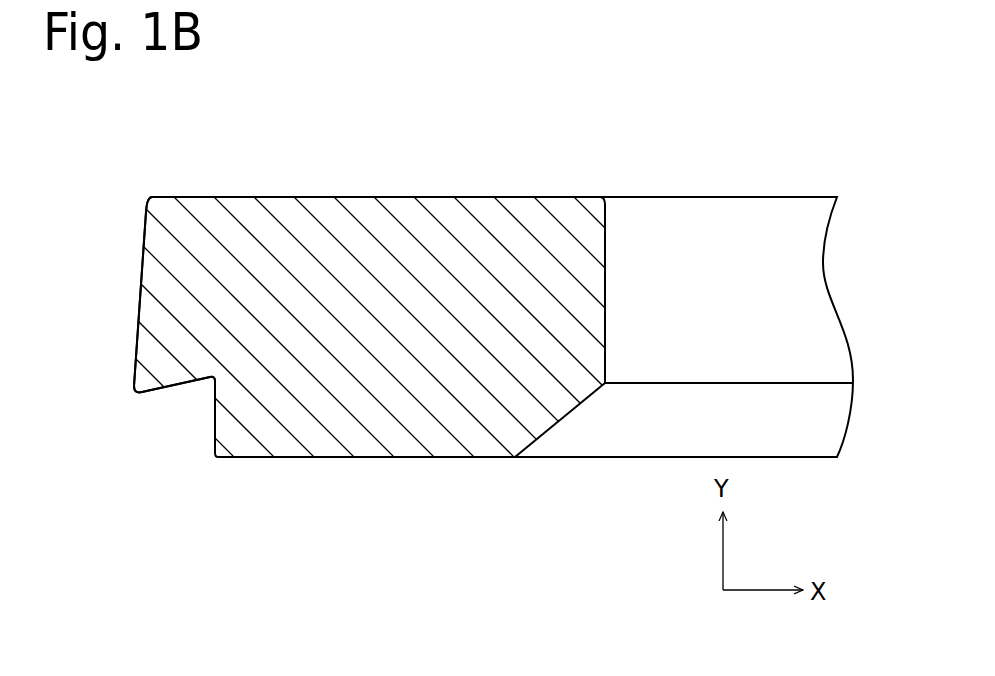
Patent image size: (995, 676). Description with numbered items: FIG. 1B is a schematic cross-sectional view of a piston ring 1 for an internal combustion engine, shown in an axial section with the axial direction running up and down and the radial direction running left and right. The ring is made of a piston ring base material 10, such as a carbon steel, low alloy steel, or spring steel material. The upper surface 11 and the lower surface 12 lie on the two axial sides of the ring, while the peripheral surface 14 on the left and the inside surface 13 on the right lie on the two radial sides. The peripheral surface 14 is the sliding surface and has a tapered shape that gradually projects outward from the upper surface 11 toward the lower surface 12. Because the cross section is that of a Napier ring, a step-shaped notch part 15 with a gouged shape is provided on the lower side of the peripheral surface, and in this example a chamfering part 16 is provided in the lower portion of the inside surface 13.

The piston ring 1 is at (554, 117).
The piston ring base material 10 is at (655, 196).
The upper surface 11 is at (384, 195).
The lower surface 12 is at (373, 462).
The inside surface 13 is at (609, 308).
The peripheral surface 14 is at (143, 233).
The step-shaped notch part 15 is at (155, 442).
The chamfering part 16 is at (574, 428).